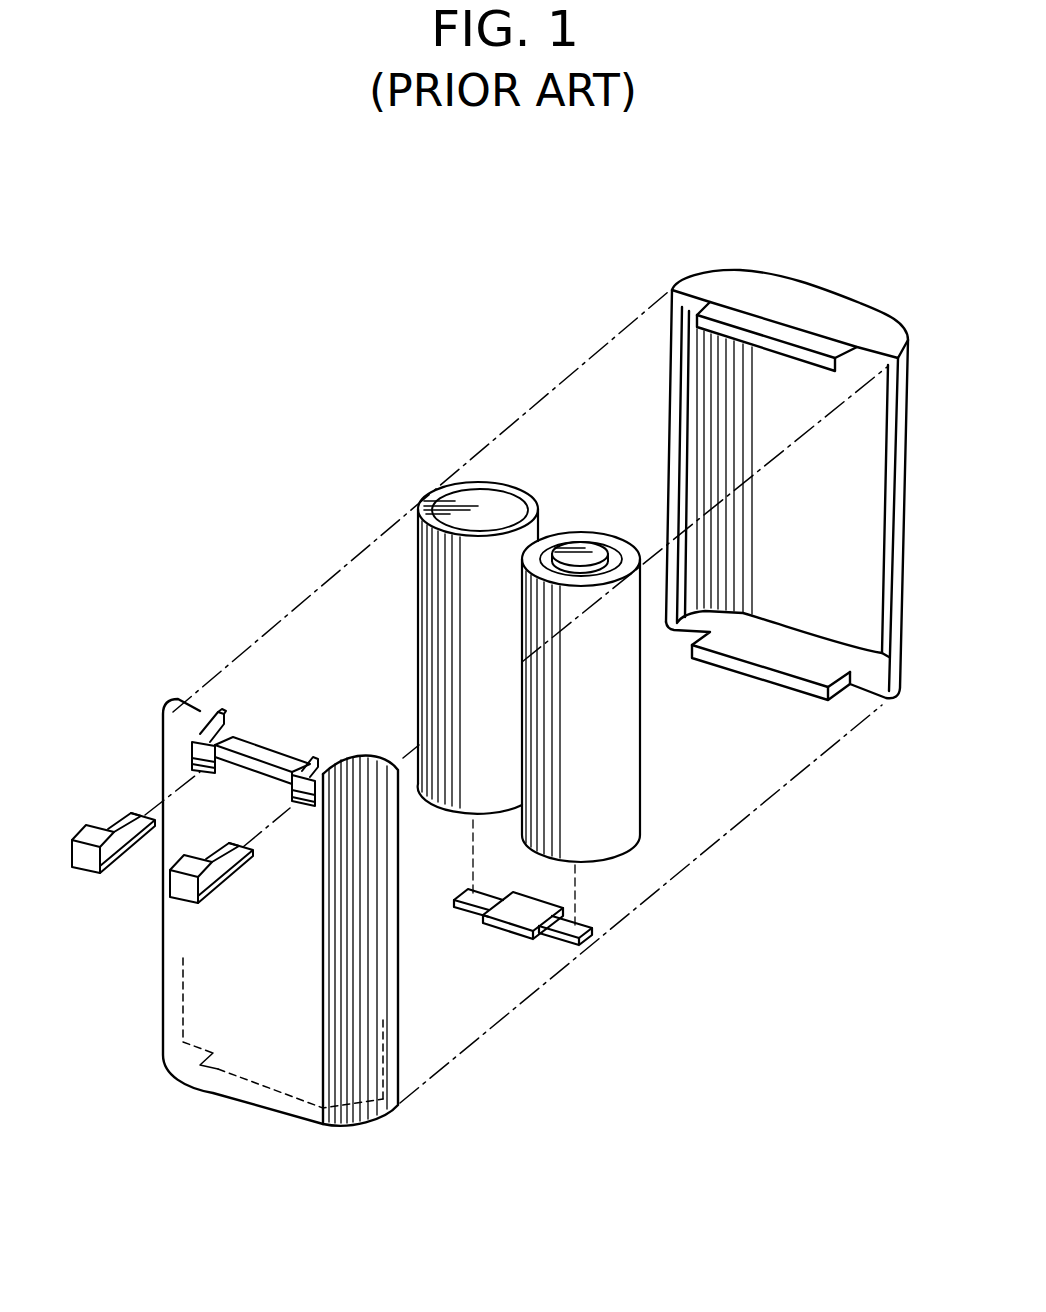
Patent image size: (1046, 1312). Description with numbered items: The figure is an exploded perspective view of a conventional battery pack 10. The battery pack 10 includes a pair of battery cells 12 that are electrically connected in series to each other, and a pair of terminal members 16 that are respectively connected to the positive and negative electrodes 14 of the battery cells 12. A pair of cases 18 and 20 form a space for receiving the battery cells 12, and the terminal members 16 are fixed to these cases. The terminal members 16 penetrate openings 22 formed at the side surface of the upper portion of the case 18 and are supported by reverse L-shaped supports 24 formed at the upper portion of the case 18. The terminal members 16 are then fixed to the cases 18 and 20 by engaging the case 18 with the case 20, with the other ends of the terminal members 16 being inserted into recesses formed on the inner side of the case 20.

The battery pack 10 is at (226, 330).
The battery cells 12 is at (398, 596).
The positive and negative electrodes 14 is at (588, 543).
The terminal members 16 is at (192, 892).
The case 18 is at (237, 1098).
The case 20 is at (800, 288).
The openings 22 is at (293, 785).
The reverse L-shaped supports 24 is at (312, 770).